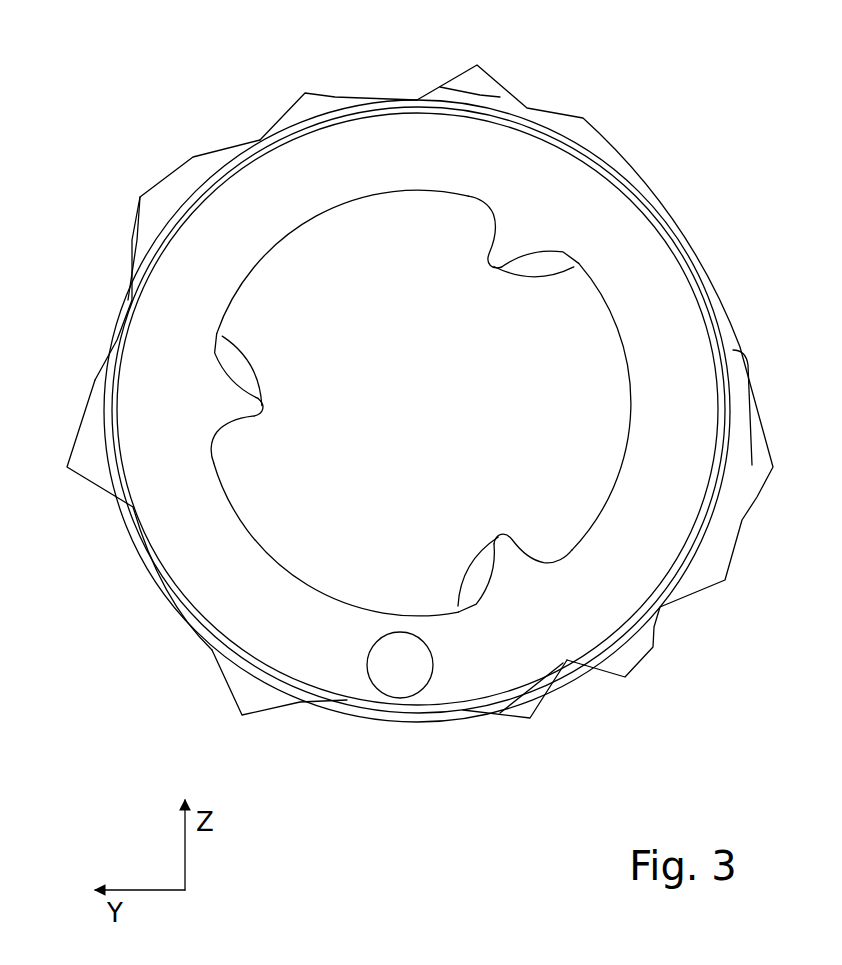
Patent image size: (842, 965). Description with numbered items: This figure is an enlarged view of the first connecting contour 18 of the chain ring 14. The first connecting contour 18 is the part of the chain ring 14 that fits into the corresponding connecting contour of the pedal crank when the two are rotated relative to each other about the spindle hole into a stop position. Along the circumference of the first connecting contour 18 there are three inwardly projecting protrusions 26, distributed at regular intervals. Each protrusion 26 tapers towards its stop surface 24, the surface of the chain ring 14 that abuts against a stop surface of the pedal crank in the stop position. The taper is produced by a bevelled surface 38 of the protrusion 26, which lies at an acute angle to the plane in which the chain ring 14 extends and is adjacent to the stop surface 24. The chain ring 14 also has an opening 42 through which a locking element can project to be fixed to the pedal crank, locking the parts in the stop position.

The chain ring 14 is at (262, 139).
The first connecting contour 18 is at (234, 499).
The stop surface 24 is at (234, 340).
The protrusion 26 is at (500, 250).
The bevelled surface 38 is at (233, 363).
The opening 42 is at (403, 665).